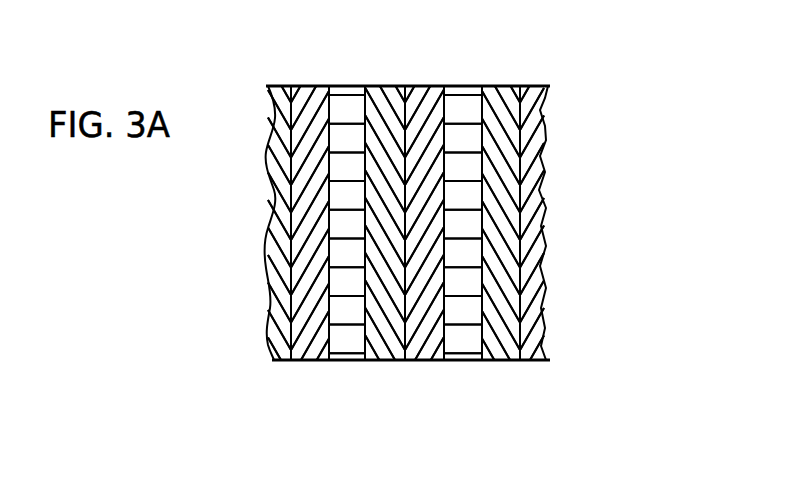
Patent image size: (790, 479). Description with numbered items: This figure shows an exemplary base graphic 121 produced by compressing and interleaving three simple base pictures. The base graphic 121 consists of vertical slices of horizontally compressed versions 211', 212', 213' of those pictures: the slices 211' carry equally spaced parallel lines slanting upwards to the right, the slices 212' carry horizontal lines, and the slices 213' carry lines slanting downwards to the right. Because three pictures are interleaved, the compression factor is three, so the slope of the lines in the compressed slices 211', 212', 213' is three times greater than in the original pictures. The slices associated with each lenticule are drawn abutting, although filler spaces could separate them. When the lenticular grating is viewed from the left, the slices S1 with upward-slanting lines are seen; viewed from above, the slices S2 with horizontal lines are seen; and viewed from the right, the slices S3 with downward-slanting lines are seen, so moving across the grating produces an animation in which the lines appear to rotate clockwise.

The base graphic 121 is at (597, 201).
The horizontally compressed slice of first base picture 211' is at (370, 211).
The horizontally compressed slice of second base picture 212' is at (418, 189).
The horizontally compressed slice of third base picture 213' is at (454, 211).
The slices with lines slanting upwards to the right S1 is at (305, 362).
The slices with horizontal lines S2 is at (348, 362).
The slices with lines slanting downwards to the right S3 is at (283, 362).